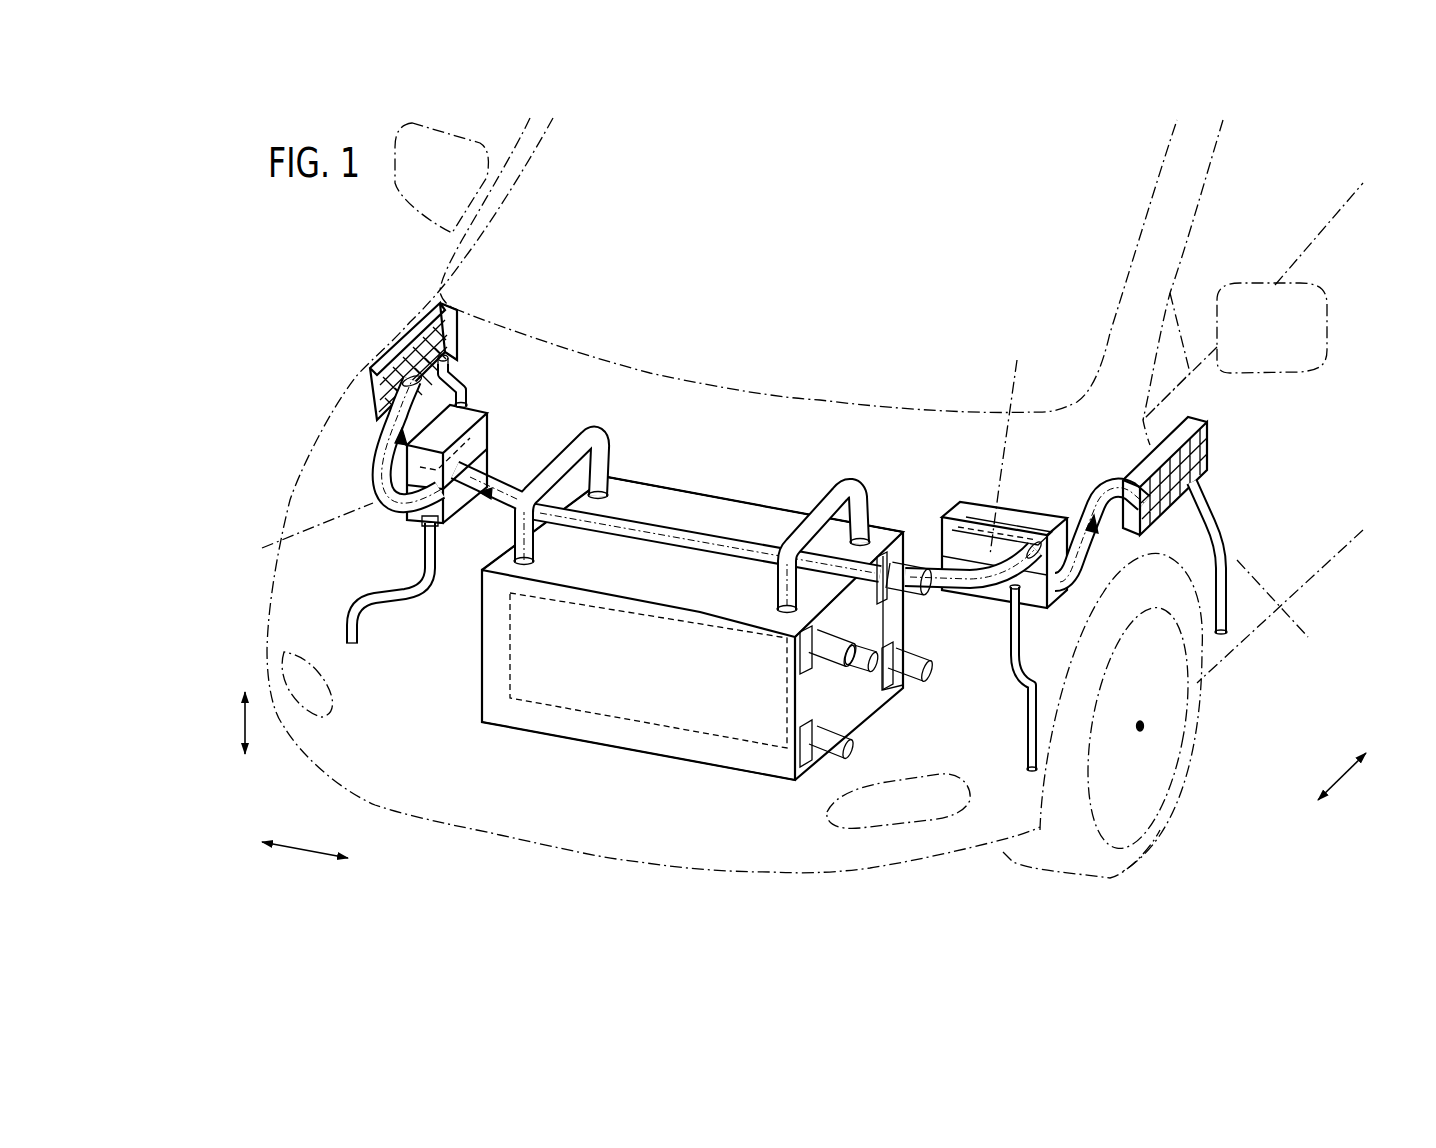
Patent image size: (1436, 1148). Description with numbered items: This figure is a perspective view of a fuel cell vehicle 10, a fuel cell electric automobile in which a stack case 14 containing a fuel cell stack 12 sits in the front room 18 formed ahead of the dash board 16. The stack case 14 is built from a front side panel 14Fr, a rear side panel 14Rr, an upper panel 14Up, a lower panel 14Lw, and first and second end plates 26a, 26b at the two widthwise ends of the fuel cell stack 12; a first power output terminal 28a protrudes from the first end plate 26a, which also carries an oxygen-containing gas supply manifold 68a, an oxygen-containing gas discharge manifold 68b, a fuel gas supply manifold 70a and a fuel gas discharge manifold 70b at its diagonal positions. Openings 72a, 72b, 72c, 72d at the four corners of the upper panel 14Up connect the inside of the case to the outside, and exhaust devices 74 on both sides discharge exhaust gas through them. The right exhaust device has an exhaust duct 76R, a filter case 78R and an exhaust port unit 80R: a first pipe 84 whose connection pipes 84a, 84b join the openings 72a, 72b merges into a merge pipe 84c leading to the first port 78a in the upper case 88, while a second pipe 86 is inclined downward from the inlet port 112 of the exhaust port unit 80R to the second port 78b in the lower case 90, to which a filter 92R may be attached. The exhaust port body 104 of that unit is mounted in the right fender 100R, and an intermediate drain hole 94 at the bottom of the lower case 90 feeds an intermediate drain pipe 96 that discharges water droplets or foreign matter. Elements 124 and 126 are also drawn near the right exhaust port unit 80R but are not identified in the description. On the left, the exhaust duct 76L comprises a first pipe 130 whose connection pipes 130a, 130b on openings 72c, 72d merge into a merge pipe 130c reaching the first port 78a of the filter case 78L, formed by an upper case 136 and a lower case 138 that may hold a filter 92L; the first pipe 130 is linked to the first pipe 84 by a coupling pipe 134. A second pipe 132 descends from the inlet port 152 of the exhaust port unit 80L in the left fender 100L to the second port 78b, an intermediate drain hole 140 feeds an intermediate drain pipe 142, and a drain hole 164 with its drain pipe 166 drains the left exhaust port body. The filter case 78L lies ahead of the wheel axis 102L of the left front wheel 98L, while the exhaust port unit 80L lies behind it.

The fuel cell vehicle 10 is at (327, 237).
The fuel cell stack 12 is at (653, 728).
The stack case 14 is at (522, 732).
The upper panel 14Up is at (693, 503).
The rear side panel 14Rr is at (748, 498).
The lower panel 14Lw is at (575, 740).
The front side panel 14Fr is at (728, 757).
The dash board 16 is at (667, 385).
The front room 18 is at (707, 414).
The first end plate 26a is at (888, 693).
The second end plate 26b is at (481, 693).
The first power output terminal 28a is at (858, 668).
The oxygen-containing gas supply manifold 68a is at (913, 594).
The oxygen-containing gas discharge manifold 68b is at (845, 746).
The fuel gas supply manifold 70a is at (830, 660).
The fuel gas discharge manifold 70b is at (926, 673).
The opening 72a is at (524, 566).
The opening 72b is at (598, 499).
The opening 72c is at (787, 613).
The opening 72d is at (860, 500).
The exhaust device 74 is at (502, 412).
The exhaust duct 76R is at (372, 474).
The exhaust duct 76L is at (1101, 555).
The filter case 78R is at (376, 500).
The filter case 78L is at (1019, 503).
The first port 78a is at (468, 470).
The second port 78b is at (418, 524).
The exhaust port unit 80R is at (418, 317).
The exhaust port unit 80L is at (1209, 443).
The first pipe 84 is at (568, 445).
The connection pipe 84a is at (531, 548).
The connection pipe 84b is at (604, 462).
The merge pipe 84c is at (484, 508).
The second pipe 86 is at (386, 433).
The upper case 88 is at (484, 437).
The lower case 90 is at (458, 474).
The filter 92R is at (416, 475).
The filter 92L is at (984, 555).
The intermediate drain hole 94 is at (437, 525).
The intermediate drain pipe 96 is at (368, 602).
The left front wheel 98L is at (1172, 805).
The right fender 100R is at (365, 398).
The left fender 100L is at (1295, 609).
The wheel axis 102L is at (1145, 727).
The exhaust port body 104 is at (450, 337).
The inlet port 112 is at (407, 360).
The outlet port 124 is at (444, 357).
The outlet pipe 126 is at (464, 395).
The first pipe 130 is at (819, 503).
The connection pipe 130a is at (777, 585).
The connection pipe 130b is at (871, 499).
The merge pipe 130c is at (873, 580).
The second pipe 132 is at (1097, 493).
The coupling pipe 134 is at (660, 535).
The upper case 136 is at (957, 510).
The lower case 138 is at (994, 594).
The intermediate drain hole 140 is at (1017, 578).
The intermediate drain pipe 142 is at (1031, 738).
The inlet port 152 is at (1143, 499).
The drain hole 164 is at (1191, 473).
The drain pipe 166 is at (1214, 530).